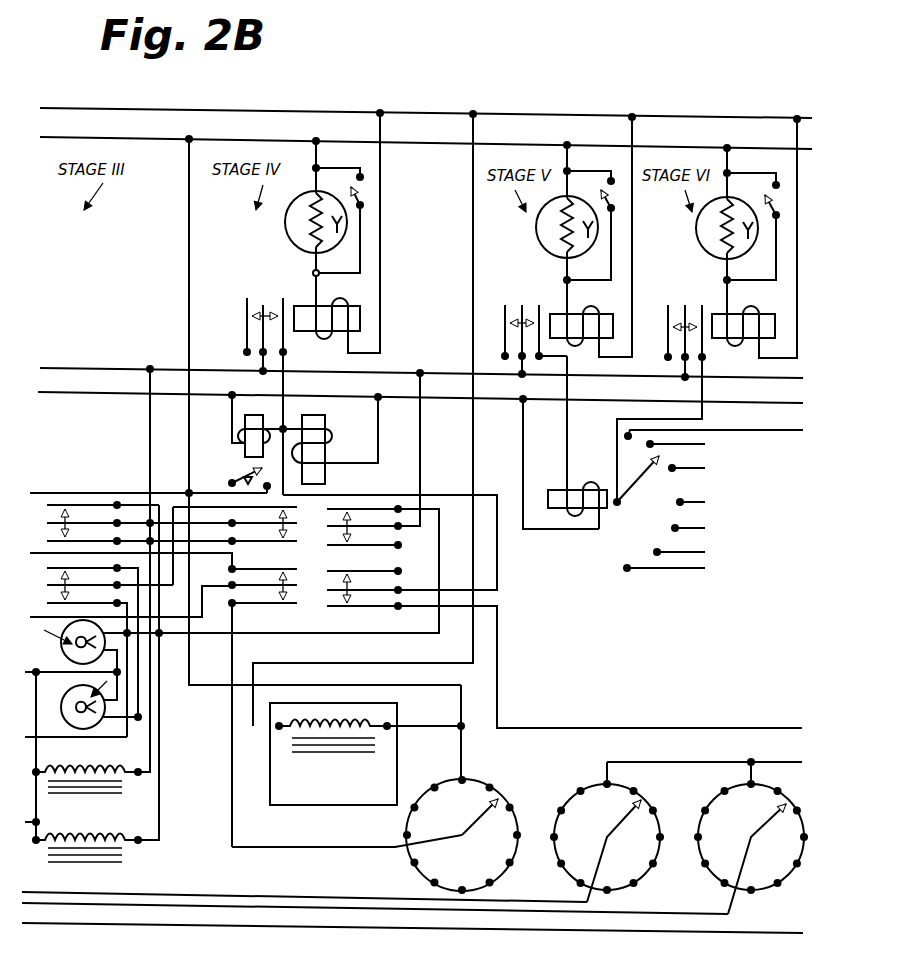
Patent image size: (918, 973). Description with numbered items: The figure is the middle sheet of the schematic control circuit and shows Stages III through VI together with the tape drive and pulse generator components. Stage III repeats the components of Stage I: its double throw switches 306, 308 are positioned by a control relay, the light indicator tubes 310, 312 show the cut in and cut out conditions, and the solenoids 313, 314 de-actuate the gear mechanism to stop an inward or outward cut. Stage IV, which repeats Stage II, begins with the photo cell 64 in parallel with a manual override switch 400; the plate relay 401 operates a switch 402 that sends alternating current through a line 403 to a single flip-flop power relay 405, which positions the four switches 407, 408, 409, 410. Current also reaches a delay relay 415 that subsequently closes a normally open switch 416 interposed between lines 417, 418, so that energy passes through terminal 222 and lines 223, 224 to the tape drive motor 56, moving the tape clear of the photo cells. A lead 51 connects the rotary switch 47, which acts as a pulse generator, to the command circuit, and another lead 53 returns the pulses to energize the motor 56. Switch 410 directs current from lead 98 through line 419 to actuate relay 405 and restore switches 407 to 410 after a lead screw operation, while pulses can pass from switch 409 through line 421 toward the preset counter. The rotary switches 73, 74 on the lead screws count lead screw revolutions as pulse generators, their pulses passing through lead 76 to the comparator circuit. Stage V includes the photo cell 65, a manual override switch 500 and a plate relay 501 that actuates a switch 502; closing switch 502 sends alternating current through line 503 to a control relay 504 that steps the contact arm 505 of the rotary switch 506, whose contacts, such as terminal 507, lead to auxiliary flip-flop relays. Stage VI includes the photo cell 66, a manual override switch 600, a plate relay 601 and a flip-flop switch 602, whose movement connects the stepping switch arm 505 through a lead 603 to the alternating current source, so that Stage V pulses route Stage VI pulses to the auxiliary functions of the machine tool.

The line 417 is at (189, 268).
The photo cell 64 is at (287, 230).
The manual override switch 400 is at (363, 206).
The plate relay 401 is at (351, 310).
The switch 402 is at (258, 313).
The line 403 is at (285, 385).
The delay relay 415 is at (270, 410).
The flip-flop power relay 405 is at (328, 460).
The normally open switch 416 is at (257, 467).
The line 418 is at (260, 485).
The terminal 222 is at (189, 492).
The double throw switch 306 is at (64, 514).
The switch 407 is at (298, 504).
The double throw switch 308 is at (64, 576).
The switch 409 is at (305, 567).
The line 421 is at (197, 558).
The switch 408 is at (340, 519).
The switch 410 is at (340, 581).
The line 419 is at (401, 590).
The line 223 is at (203, 688).
The lead 53 is at (463, 752).
The line 224 is at (443, 716).
The synchronous motor 56 is at (327, 807).
The lead 51 is at (320, 853).
The rotary switch 47 is at (425, 877).
The rotary switch 74 is at (650, 874).
The rotary switch 73 is at (788, 880).
The lead 76 is at (712, 765).
The lead 98 is at (668, 933).
The light indicator tube 310 is at (70, 659).
The light indicator tube 312 is at (70, 723).
The solenoid 314 is at (103, 797).
The solenoid 313 is at (98, 868).
The photo cell 65 is at (549, 247).
The manual override switch 500 is at (614, 208).
The plate relay 501 is at (582, 318).
The switch 502 is at (518, 321).
The line 503 is at (565, 440).
The control relay 504 is at (577, 490).
The contact arm 505 is at (634, 485).
The terminal 507 is at (624, 438).
The rotary switch 506 is at (702, 481).
The lead 603 is at (635, 418).
The photo cell 66 is at (707, 246).
The manual override switch 600 is at (766, 209).
The plate relay 601 is at (742, 318).
The flip-flop switch 602 is at (680, 322).